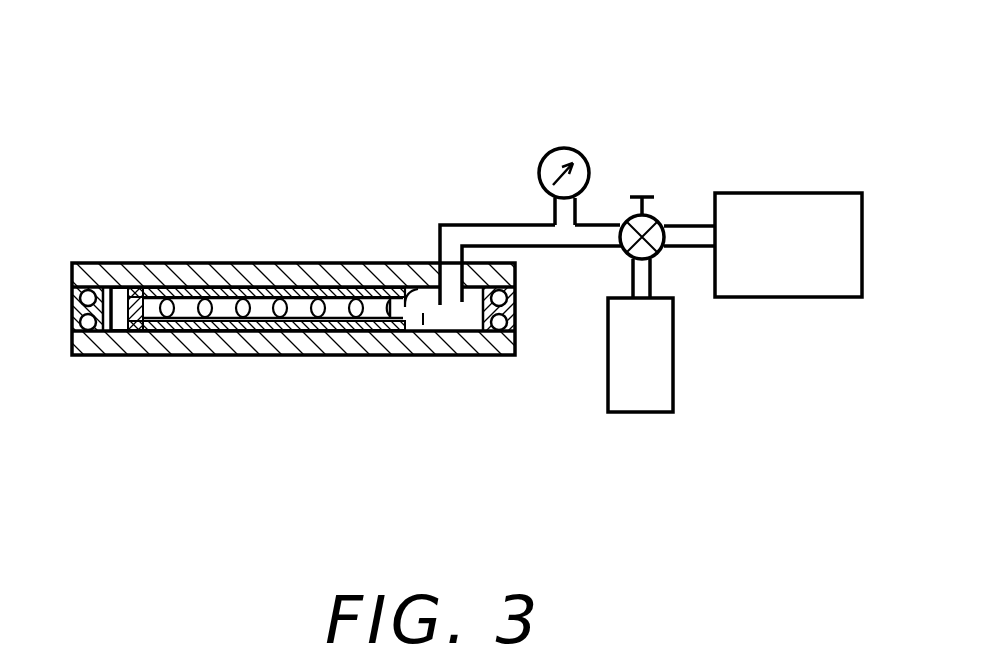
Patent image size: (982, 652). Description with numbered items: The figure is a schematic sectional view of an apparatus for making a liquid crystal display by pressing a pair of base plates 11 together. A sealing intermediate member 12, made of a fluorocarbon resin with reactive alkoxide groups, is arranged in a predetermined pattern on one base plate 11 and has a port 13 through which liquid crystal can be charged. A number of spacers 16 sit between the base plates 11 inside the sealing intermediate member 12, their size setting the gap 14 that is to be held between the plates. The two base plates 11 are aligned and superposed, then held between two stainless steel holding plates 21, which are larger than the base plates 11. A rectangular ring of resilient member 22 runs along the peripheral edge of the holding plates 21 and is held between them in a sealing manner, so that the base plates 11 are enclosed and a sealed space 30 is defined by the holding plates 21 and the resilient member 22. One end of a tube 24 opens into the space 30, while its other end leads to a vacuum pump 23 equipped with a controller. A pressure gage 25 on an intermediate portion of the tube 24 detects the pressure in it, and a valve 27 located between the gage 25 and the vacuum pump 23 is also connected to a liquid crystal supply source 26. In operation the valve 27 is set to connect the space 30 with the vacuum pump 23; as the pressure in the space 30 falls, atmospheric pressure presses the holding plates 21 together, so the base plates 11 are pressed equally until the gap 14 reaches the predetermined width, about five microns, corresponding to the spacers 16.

The base plate 11 is at (351, 263).
The sealing intermediate member 12 is at (100, 263).
The port 13 is at (417, 288).
The gap 14 is at (188, 305).
The spacer 16 is at (358, 331).
The holding plate 21 is at (138, 263).
The resilient member 22 is at (73, 307).
The vacuum pump 23 is at (764, 193).
The tube 24 is at (465, 225).
The pressure gage 25 is at (562, 150).
The liquid crystal supply source 26 is at (645, 412).
The valve 27 is at (665, 210).
The space 30 is at (423, 325).